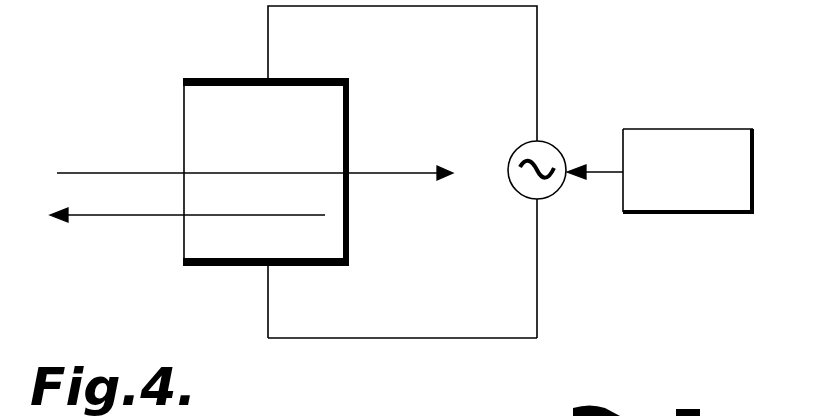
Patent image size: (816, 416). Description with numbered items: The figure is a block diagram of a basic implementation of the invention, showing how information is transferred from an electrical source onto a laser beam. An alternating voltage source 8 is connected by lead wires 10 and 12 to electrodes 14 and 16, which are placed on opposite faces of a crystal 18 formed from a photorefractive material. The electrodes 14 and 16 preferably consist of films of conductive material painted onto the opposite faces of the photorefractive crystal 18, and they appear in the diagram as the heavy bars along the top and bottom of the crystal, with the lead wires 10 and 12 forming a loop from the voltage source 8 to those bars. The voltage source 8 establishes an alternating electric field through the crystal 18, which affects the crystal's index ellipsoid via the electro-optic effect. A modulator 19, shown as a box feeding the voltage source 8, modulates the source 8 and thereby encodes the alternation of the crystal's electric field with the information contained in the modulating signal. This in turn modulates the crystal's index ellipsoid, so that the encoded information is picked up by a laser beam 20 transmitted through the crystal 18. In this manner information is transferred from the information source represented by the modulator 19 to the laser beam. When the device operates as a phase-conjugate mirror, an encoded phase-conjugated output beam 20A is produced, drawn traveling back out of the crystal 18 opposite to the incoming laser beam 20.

The alternating voltage source 8 is at (559, 192).
The lead wire 10 is at (419, 6).
The lead wire 12 is at (353, 338).
The electrode 14 is at (207, 78).
The electrode 16 is at (200, 268).
The crystal 18 is at (184, 237).
The modulator 19 is at (645, 129).
The laser beam 20 is at (116, 172).
The phase-conjugated output beam 20A is at (88, 217).